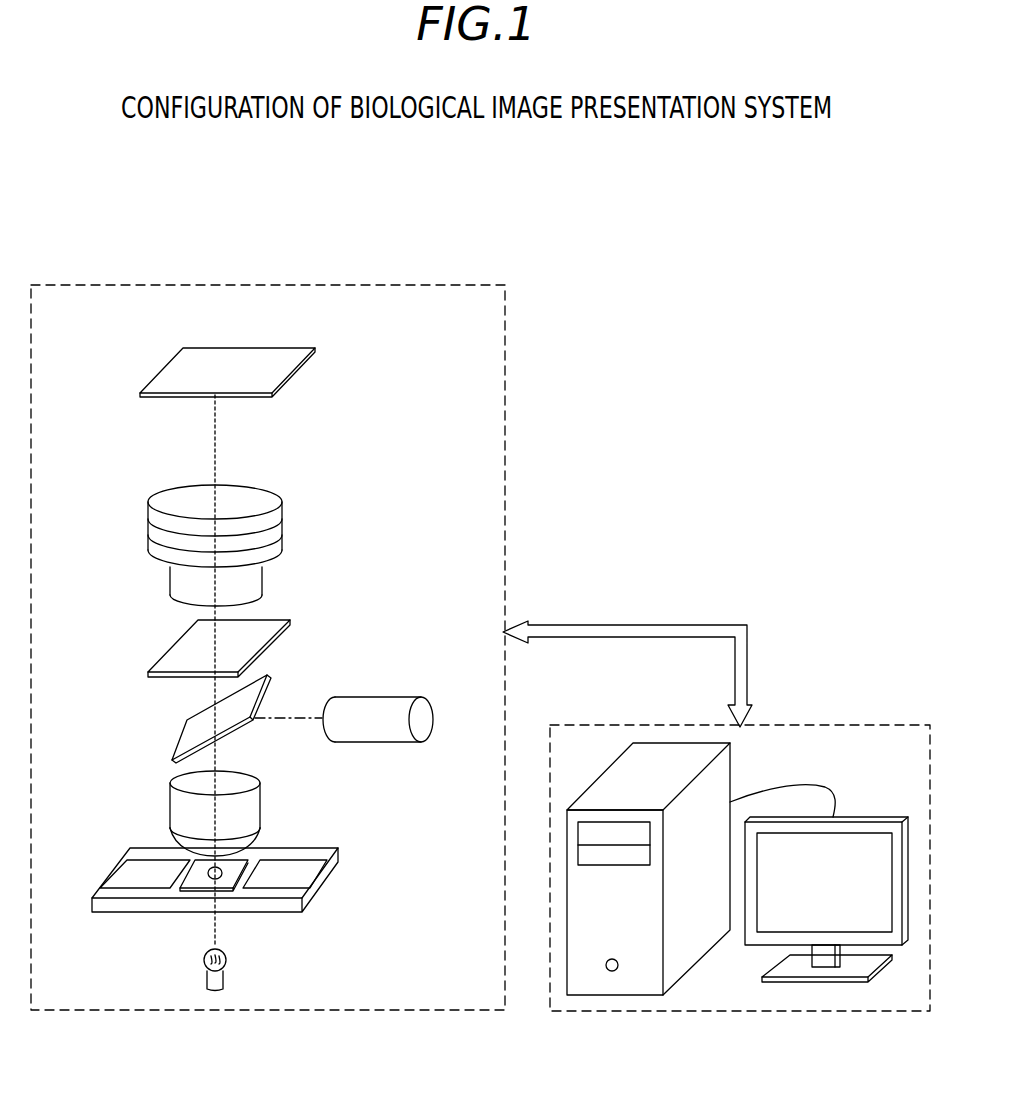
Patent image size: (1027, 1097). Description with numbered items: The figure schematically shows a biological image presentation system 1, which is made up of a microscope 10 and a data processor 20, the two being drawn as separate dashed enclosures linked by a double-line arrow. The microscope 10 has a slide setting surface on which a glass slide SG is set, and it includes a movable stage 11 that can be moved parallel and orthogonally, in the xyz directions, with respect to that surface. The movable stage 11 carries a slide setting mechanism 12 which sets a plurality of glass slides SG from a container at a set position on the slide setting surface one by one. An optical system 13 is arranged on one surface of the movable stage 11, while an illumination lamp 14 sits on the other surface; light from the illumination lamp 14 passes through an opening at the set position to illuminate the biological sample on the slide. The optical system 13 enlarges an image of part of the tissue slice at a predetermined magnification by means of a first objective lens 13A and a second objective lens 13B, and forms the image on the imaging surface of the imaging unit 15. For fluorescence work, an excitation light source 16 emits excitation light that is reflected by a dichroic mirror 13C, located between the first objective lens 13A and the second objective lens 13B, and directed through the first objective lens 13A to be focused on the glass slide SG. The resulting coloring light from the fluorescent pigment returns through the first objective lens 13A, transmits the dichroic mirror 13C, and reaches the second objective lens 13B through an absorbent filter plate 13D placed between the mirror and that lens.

The biological image presentation system 1 is at (726, 202).
The microscope 10 is at (452, 283).
The movable stage 11 is at (312, 848).
The slide setting mechanism 12 is at (322, 884).
The optical system 13 is at (135, 485).
The first objective lens 13A is at (262, 790).
The second objective lens 13B is at (284, 526).
The dichroic mirror 13C is at (270, 676).
The absorbent filter plate 13D is at (291, 620).
The illumination lamp 14 is at (226, 973).
The imaging unit 15 is at (324, 328).
The excitation light source 16 is at (352, 695).
The data processor 20 is at (670, 1012).
The glass slide SG is at (178, 890).